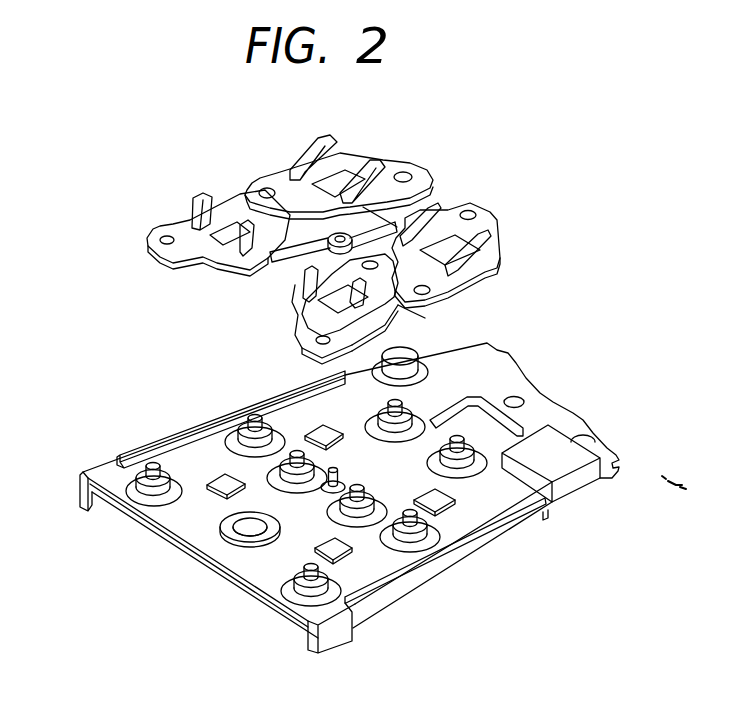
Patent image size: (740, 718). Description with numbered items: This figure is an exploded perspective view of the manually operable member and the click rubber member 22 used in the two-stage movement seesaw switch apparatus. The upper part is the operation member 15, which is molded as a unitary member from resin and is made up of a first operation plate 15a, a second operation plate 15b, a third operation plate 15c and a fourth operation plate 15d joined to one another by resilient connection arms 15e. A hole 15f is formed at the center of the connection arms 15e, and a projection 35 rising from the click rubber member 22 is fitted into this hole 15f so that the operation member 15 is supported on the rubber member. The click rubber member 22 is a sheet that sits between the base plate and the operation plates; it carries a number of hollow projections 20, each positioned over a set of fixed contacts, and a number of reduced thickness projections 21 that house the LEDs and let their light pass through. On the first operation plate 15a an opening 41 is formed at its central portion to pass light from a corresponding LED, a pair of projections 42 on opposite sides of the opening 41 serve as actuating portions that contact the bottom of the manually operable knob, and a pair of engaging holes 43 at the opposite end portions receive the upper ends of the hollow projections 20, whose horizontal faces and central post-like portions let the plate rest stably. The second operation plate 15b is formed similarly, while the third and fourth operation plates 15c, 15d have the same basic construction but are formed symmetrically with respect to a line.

The operation member 15 is at (257, 179).
The first operation plate 15a is at (300, 318).
The second operation plate 15b is at (500, 217).
The third operation plate 15c is at (158, 232).
The fourth operation plate 15d is at (398, 160).
The resilient connection arms 15e is at (277, 267).
The hole 15f is at (420, 205).
The hollow projections 20 is at (280, 573).
The reduced thickness projections 21 is at (340, 552).
The click rubber member 22 is at (146, 535).
The projection 35 is at (333, 466).
The opening 41 is at (400, 335).
The projections 42 is at (425, 318).
The engaging holes 43 is at (295, 330).